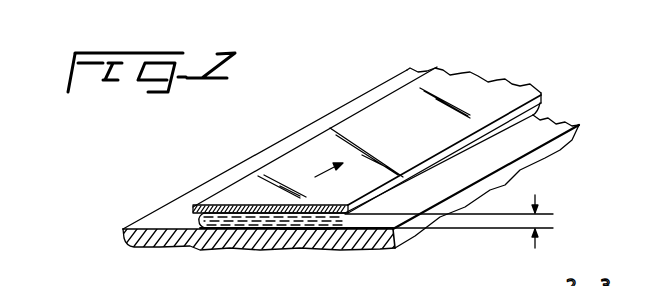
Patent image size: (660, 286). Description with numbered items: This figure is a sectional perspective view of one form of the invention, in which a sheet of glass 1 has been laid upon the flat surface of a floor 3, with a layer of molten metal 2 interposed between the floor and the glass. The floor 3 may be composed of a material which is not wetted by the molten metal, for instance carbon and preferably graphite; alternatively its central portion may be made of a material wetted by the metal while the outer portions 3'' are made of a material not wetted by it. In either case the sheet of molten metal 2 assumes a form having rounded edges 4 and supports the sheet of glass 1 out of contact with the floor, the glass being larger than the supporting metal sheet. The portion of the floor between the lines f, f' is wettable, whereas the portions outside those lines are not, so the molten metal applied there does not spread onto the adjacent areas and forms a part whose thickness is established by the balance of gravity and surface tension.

The sheet of glass 1 is at (215, 192).
The layer of molten metal 2 is at (262, 221).
The floor 3 is at (305, 257).
The rounded edges 4 is at (190, 247).
The outer portions of the floor 3'' is at (433, 123).
The line f is at (187, 267).
The line f' is at (348, 259).
The zone z' is at (216, 268).